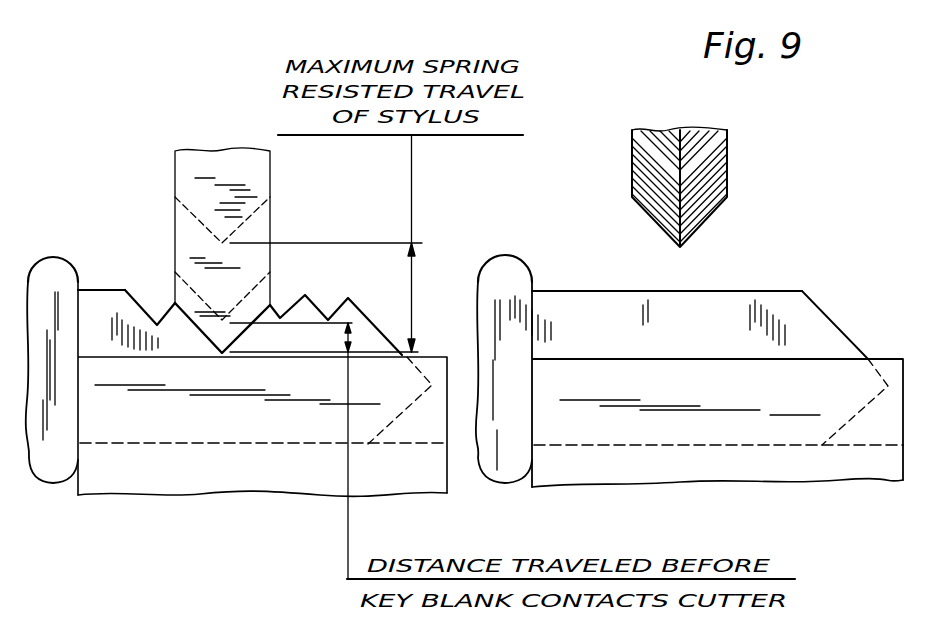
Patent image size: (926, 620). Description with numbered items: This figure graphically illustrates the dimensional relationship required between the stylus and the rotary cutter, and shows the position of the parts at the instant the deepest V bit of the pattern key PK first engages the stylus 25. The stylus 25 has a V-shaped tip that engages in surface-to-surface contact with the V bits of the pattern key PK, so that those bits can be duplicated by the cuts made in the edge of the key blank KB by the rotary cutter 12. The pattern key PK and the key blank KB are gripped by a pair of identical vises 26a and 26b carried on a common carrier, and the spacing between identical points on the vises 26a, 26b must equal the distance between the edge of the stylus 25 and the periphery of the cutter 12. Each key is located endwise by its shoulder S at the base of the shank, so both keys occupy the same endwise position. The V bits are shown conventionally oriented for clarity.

The rotary cutter 12 is at (700, 146).
The stylus 25 is at (181, 162).
The vise 26a is at (218, 457).
The vise 26b is at (690, 463).
The pattern key PK is at (58, 270).
The key blank KB is at (516, 278).
The shoulder S is at (80, 290).